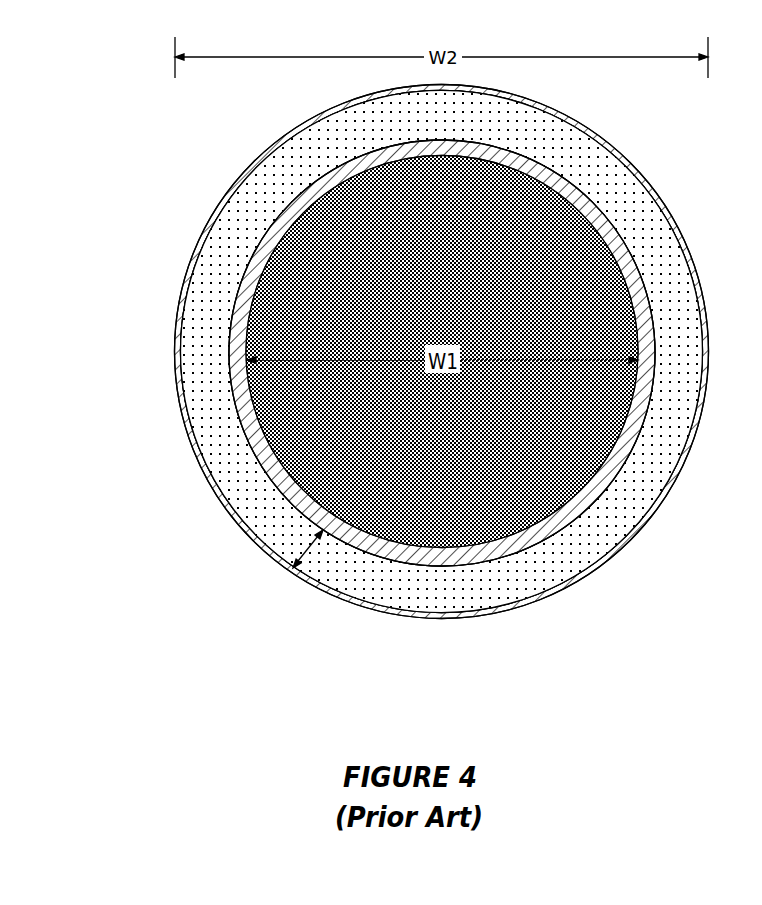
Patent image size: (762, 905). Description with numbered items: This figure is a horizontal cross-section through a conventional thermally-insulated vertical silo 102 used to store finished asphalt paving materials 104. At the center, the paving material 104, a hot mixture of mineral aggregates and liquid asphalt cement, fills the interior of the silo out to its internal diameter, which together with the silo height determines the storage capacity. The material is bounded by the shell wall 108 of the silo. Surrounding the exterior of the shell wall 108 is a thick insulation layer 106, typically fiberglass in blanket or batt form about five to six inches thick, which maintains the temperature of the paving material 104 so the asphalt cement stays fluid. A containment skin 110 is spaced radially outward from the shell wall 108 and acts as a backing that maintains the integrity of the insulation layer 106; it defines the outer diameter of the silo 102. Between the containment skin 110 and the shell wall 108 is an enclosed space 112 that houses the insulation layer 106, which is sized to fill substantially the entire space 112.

The thermally-insulated vertical silo 102 is at (663, 191).
The finished asphalt paving materials 104 is at (308, 443).
The insulation layer 106 is at (213, 339).
The shell wall 108 is at (249, 278).
The containment skin 110 is at (226, 198).
The enclosed space 112 is at (308, 548).